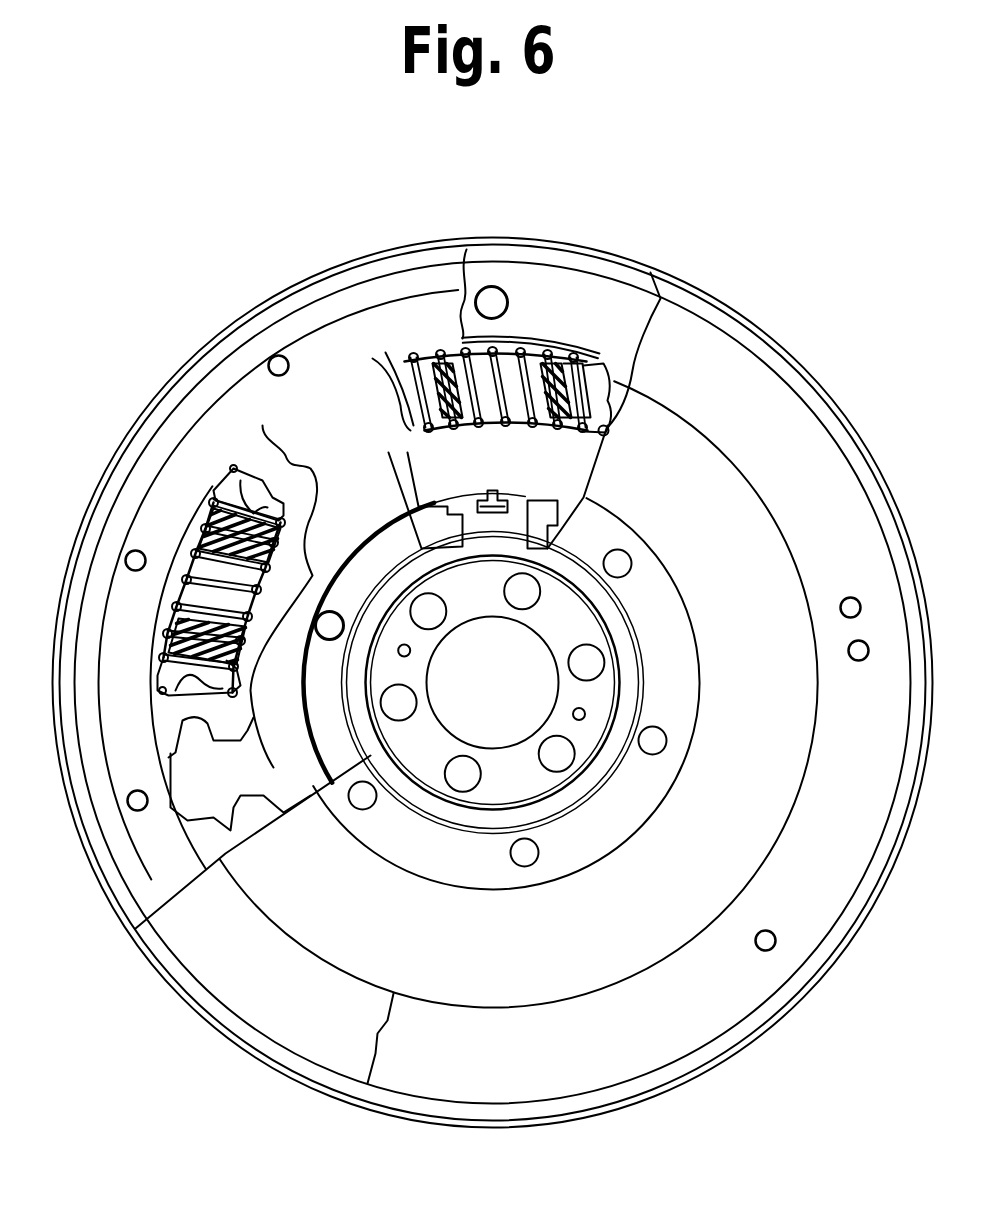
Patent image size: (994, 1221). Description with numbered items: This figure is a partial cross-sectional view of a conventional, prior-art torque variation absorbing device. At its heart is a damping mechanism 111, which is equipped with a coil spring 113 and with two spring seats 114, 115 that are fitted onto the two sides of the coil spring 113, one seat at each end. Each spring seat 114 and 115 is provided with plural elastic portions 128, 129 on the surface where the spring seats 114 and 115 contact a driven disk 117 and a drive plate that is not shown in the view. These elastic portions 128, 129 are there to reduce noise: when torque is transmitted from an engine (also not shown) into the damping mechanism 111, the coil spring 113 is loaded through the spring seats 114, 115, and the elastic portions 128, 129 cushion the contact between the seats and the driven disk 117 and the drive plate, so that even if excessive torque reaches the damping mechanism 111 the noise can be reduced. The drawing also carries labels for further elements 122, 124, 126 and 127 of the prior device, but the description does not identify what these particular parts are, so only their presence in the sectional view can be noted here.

The damping mechanism 111 is at (523, 438).
The coil spring 113 is at (523, 340).
The spring seat 114 is at (608, 352).
The spring seat 115 is at (420, 430).
The driven disk 117 is at (305, 420).
The friction lining block 122 is at (615, 370).
The rivet pin 124 is at (602, 345).
The actuating lever 126 is at (398, 345).
The support plate contour 127 is at (355, 405).
The elastic portion 128 is at (405, 345).
The elastic portion 129 is at (380, 400).